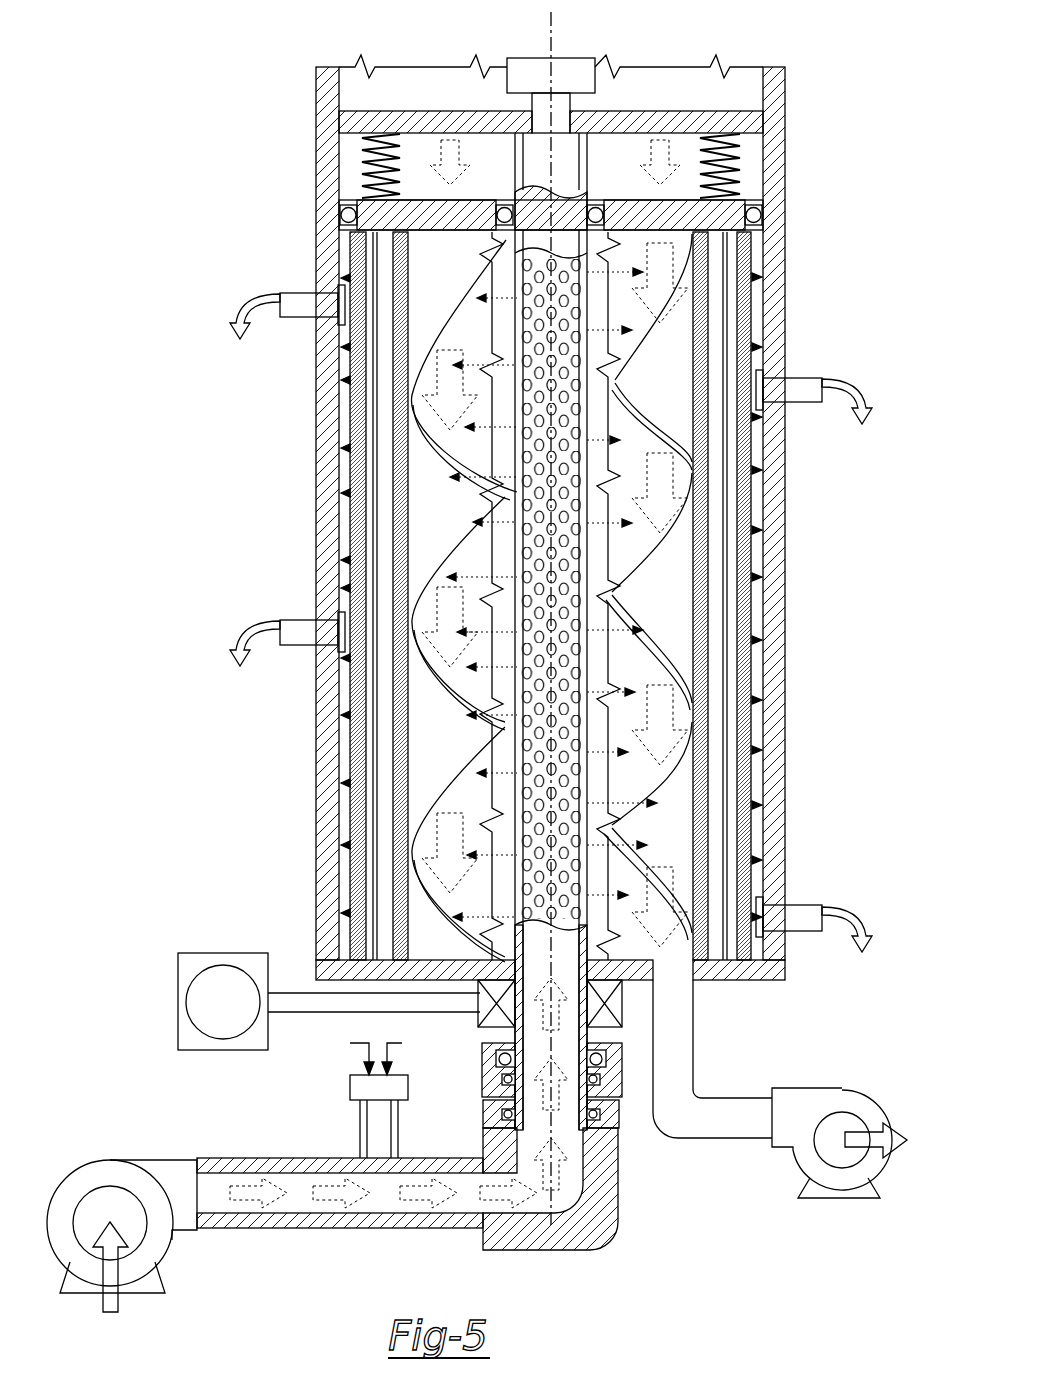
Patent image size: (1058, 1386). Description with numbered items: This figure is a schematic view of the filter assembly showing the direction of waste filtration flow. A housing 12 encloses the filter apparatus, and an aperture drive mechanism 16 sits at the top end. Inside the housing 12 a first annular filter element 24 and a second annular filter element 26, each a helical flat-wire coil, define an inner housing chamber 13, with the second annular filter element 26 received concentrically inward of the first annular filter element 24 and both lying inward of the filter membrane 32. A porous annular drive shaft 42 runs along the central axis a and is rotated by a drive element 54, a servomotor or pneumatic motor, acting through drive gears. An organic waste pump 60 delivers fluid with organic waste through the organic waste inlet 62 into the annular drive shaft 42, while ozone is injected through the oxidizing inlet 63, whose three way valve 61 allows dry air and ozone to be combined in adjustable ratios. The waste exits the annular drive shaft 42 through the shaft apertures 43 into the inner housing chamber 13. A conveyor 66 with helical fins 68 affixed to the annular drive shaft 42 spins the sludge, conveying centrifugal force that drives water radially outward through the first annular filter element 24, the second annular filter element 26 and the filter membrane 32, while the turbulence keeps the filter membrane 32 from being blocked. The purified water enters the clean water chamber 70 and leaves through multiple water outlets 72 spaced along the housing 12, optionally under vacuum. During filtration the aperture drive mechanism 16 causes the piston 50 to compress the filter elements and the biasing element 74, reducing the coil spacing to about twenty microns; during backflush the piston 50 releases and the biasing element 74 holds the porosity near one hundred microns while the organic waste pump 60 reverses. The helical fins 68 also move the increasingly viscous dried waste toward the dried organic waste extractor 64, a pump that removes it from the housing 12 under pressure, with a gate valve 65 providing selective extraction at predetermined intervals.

The axis a is at (553, 35).
The housing 12 is at (765, 603).
The inner housing chamber 13 is at (653, 384).
The aperture drive mechanism 16 is at (578, 58).
The first annular filter element 24 is at (355, 418).
The second annular filter element 26 is at (400, 468).
The filter membrane 32 is at (378, 262).
The annular drive shaft 42 is at (587, 726).
The shaft apertures 43 is at (517, 550).
The piston 50 is at (628, 200).
The drive element 54 is at (224, 953).
The organic waste pump 60 is at (165, 1160).
The three way valve 61 is at (408, 1088).
The organic waste inlet 62 is at (333, 1158).
The oxidizing inlet 63 is at (398, 1138).
The dried organic waste extractor 64 is at (832, 1093).
The gate valve 65 is at (694, 1026).
The conveyor 66 is at (668, 560).
The helical fins 68 is at (440, 330).
The clean water chamber 70 is at (757, 495).
The water outlet 72 is at (300, 293).
The biasing element 74 is at (360, 150).